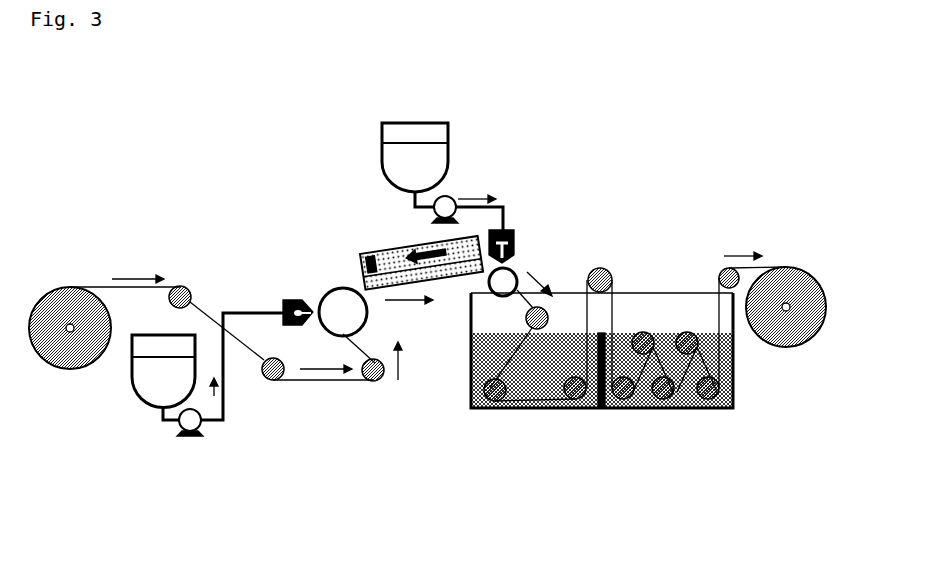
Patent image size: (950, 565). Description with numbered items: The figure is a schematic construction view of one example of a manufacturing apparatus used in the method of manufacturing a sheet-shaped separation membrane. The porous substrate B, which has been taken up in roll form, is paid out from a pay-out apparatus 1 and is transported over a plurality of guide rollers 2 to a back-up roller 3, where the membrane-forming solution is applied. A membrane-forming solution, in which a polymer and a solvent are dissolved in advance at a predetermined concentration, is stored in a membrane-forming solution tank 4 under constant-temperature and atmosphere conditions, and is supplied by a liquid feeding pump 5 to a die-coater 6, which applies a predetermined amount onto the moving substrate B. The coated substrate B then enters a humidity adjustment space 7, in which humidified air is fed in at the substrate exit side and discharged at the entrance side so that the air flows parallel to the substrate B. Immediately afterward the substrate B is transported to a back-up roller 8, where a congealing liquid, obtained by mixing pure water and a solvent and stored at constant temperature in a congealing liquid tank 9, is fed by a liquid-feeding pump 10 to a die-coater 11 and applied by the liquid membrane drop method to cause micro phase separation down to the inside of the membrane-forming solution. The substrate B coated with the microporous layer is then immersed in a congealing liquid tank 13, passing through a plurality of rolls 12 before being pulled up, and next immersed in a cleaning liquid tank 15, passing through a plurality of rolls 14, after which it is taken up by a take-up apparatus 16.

The pay-out apparatus 1 is at (70, 289).
The guide rollers 2 is at (276, 315).
The back-up roller 3 is at (330, 271).
The membrane-forming solution tank 4 is at (145, 386).
The liquid feeding pump 5 is at (208, 396).
The die-coater 6 is at (285, 287).
The humidity adjustment space 7 is at (421, 248).
The back-up roller 8 is at (535, 254).
The congealing liquid tank 9 is at (444, 157).
The liquid-feeding pump 10 is at (474, 186).
The die-coater 11 is at (540, 211).
The rolls 12 is at (538, 335).
The congealing liquid tank 13 is at (513, 371).
The rolls 14 is at (652, 349).
The cleaning liquid tank 15 is at (636, 364).
The take-up apparatus 16 is at (772, 283).
The porous substrate B is at (118, 288).